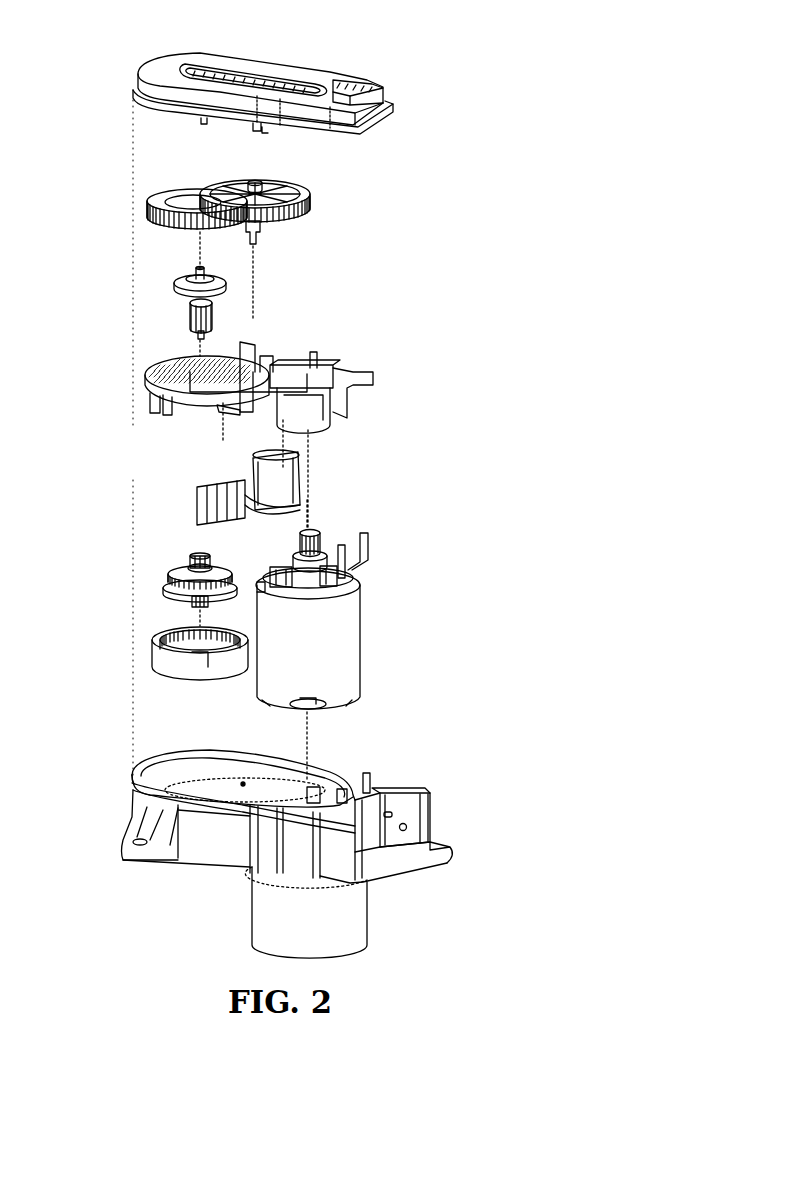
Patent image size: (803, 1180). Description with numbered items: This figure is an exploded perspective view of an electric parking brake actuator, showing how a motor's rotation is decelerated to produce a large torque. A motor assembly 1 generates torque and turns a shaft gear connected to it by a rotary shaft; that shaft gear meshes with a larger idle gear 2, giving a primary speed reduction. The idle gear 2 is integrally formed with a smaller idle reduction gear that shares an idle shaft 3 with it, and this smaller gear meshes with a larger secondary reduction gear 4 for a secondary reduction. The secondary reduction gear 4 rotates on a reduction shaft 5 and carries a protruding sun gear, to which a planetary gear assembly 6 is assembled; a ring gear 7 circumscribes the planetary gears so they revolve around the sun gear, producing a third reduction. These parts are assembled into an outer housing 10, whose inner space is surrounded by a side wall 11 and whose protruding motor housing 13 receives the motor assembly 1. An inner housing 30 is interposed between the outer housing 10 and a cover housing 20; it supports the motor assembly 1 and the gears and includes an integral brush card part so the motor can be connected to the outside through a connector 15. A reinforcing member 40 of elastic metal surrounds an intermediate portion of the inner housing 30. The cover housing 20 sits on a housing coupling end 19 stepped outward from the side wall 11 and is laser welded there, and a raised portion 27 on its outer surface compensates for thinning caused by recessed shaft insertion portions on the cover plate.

The motor assembly 1 is at (358, 638).
The idle gear 2 is at (310, 197).
The idle shaft 3 is at (258, 182).
The secondary reduction gear 4 is at (148, 208).
The reduction shaft 5 is at (190, 276).
The planetary gear assembly 6 is at (165, 582).
The ring gear 7 is at (155, 641).
The outer housing 10 is at (397, 872).
The side wall 11 is at (218, 853).
The motor housing 13 is at (263, 918).
The connector 15 is at (447, 858).
The housing coupling end 19 is at (132, 775).
The cover housing 20 is at (380, 85).
The raised portion 27 is at (292, 78).
The inner housing 30 is at (350, 365).
The reinforcing member 40 is at (303, 474).